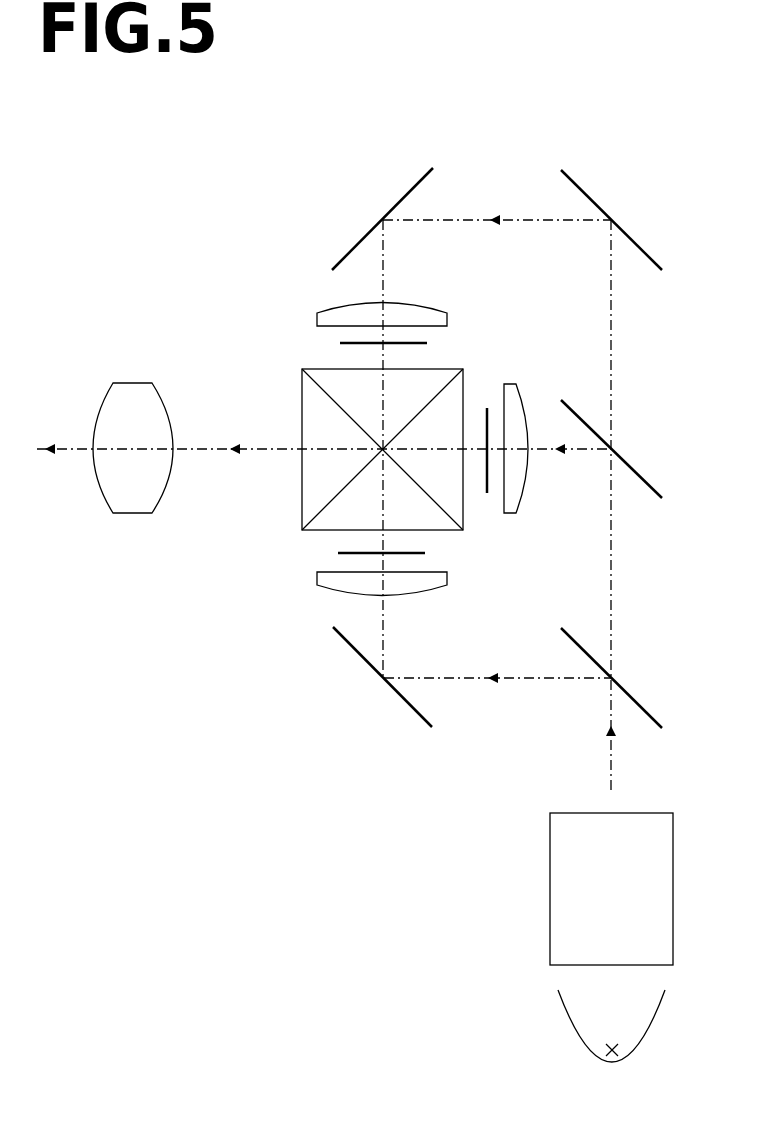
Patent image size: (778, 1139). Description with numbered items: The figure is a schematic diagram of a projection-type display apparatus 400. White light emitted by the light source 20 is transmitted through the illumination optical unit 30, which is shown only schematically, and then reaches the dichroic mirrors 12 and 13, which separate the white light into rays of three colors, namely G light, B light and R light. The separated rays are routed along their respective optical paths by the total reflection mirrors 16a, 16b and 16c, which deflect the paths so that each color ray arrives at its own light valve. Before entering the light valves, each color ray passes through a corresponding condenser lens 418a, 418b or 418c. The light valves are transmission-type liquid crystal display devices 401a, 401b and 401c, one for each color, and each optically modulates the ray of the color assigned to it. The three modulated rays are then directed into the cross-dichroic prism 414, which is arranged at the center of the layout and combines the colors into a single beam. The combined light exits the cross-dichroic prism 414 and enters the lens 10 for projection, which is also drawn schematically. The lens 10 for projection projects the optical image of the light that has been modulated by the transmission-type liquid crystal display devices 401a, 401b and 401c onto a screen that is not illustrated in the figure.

The projection-type display apparatus 400 is at (188, 198).
The lens for projection 10 is at (132, 382).
The cross-dichroic prism 414 is at (312, 485).
The transmission-type liquid crystal display device 401a is at (347, 553).
The transmission-type liquid crystal display device 401b is at (487, 408).
The transmission-type liquid crystal display device 401c is at (340, 343).
The condenser lens 418a is at (423, 594).
The condenser lens 418b is at (530, 495).
The condenser lens 418c is at (440, 279).
The total reflection mirror 16a is at (351, 648).
The total reflection mirror 16b is at (641, 248).
The total reflection mirror 16c is at (350, 247).
The dichroic mirror 13 is at (641, 478).
The dichroic mirror 12 is at (642, 707).
The illumination optical unit 30 is at (675, 888).
The light source 20 is at (668, 1012).